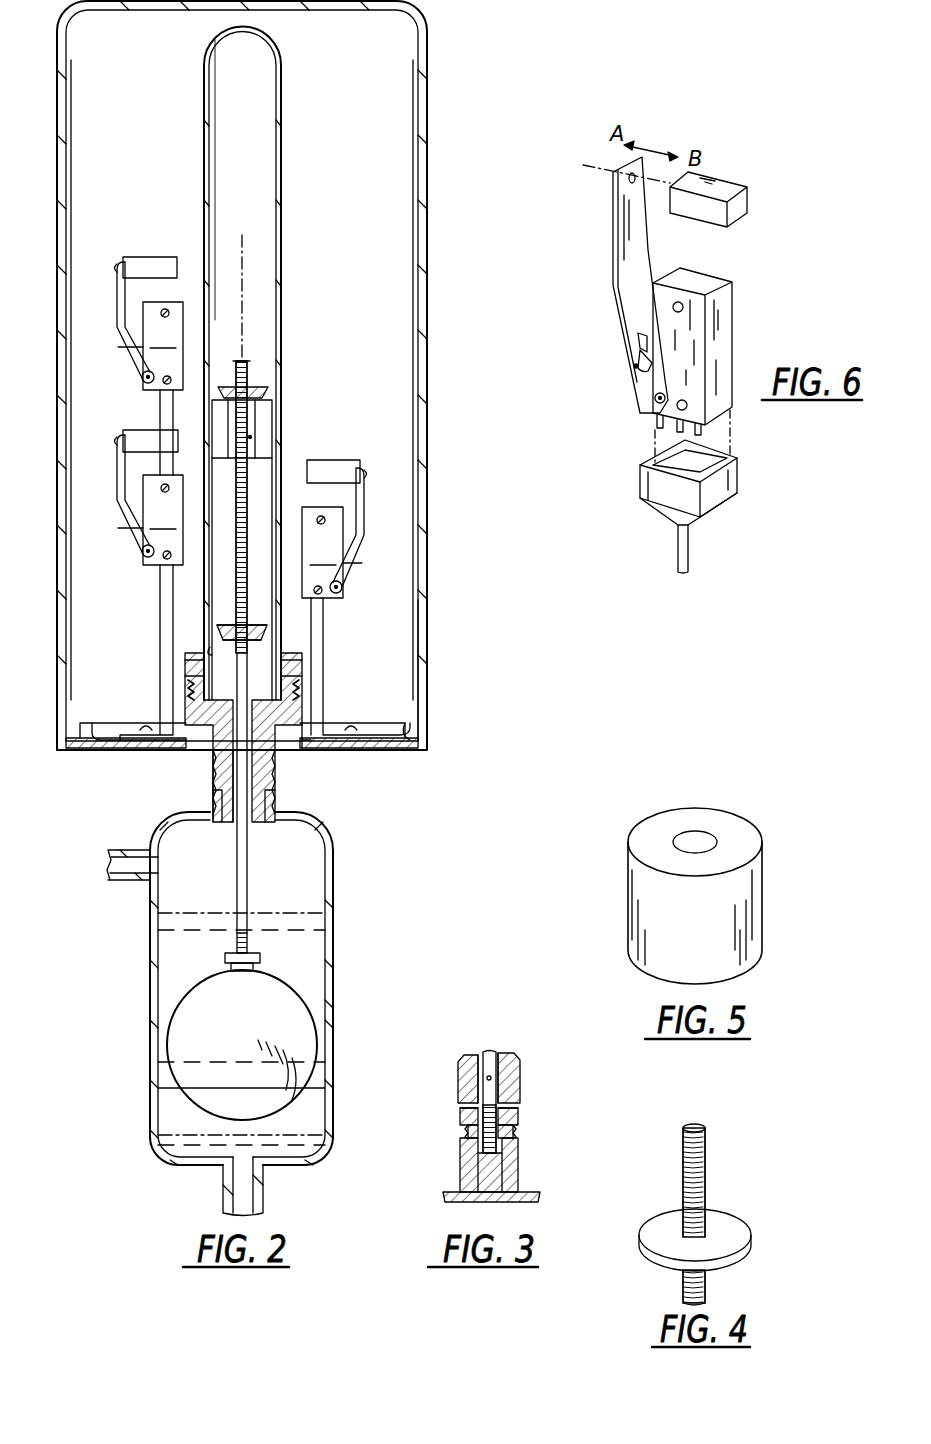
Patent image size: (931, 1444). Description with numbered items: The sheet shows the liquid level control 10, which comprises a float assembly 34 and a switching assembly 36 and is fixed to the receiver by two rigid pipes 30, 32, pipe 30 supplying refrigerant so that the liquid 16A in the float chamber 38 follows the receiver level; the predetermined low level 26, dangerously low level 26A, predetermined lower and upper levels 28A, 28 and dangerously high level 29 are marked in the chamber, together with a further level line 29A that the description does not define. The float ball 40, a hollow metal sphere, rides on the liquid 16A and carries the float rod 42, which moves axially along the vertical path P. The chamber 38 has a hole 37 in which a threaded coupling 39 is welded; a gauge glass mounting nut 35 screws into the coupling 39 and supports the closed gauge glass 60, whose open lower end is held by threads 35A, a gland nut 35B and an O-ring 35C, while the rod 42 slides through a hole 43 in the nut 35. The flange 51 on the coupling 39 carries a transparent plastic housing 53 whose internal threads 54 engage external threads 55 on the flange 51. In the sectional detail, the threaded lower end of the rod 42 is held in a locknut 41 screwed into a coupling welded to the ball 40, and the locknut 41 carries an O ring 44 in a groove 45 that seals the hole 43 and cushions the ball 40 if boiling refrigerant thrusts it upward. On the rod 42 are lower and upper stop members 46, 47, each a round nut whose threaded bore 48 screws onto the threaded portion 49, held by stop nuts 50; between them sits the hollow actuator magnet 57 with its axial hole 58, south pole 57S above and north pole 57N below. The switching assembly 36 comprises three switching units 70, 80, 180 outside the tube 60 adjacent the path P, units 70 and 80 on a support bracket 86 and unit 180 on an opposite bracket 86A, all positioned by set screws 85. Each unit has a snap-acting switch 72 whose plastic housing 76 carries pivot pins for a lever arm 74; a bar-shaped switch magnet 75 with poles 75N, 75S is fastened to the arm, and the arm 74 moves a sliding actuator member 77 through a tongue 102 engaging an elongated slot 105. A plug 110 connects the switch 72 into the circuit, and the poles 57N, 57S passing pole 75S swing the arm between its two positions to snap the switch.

In FIG. 2, the liquid level control 10 is at (378, 794).
In FIG. 2, the liquid 16A is at (305, 1126).
In FIG. 2, the predetermined low level 26 is at (175, 1135).
In FIG. 2, the dangerously low level 26A is at (165, 1146).
In FIG. 2, the predetermined upper level 28 is at (200, 1062).
In FIG. 2, the predetermined lower level 28A is at (170, 1086).
In FIG. 2, the dangerously high level 29 is at (170, 915).
In FIG. 2, the high level line 29A is at (178, 932).
In FIG. 2, the pipe 30 is at (265, 1200).
In FIG. 2, the pipe 32 is at (130, 850).
In FIG. 2, the float assembly 34 is at (338, 960).
In FIG. 2, the gauge glass mounting nut 35 is at (272, 802).
In FIG. 3, the gauge glass mounting nut 35 is at (520, 1066).
In FIG. 2, the threads 35A is at (302, 668).
In FIG. 2, the gland nut 35B is at (187, 662).
In FIG. 2, the O-ring 35C is at (294, 690).
In FIG. 2, the switching assembly 36 is at (436, 52).
In FIG. 2, the hole 37 is at (212, 814).
In FIG. 2, the float chamber 38 is at (336, 1008).
In FIG. 2, the coupling 39 is at (213, 772).
In FIG. 2, the float ball 40 is at (268, 990).
In FIG. 3, the float ball 40 is at (532, 1198).
In FIG. 3, the locknut 41 is at (518, 1128).
In FIG. 2, the float rod 42 is at (249, 852).
In FIG. 3, the float rod 42 is at (492, 1050).
In FIG. 4, the float rod 42 is at (706, 1133).
In FIG. 2, the hole 43 is at (250, 770).
In FIG. 3, the hole 43 is at (492, 1080).
In FIG. 3, the O ring 44 is at (512, 1114).
In FIG. 3, the groove 45 is at (460, 1116).
In FIG. 2, the lower stop member 46 is at (224, 626).
In FIG. 4, the lower stop member 46 is at (750, 1253).
In FIG. 2, the upper stop member 47 is at (266, 394).
In FIG. 2, the threaded bore 48 is at (248, 628).
In FIG. 4, the threaded bore 48 is at (705, 1220).
In FIG. 2, the threaded portion 49 is at (248, 505).
In FIG. 4, the threaded portion 49 is at (706, 1160).
In FIG. 2, the stop nuts 50 is at (262, 386).
In FIG. 2, the flange 51 is at (350, 752).
In FIG. 3, the flange 51 is at (518, 1168).
In FIG. 2, the protective housing 53 is at (428, 662).
In FIG. 2, the internal threads 54 is at (416, 726).
In FIG. 2, the external threads 55 is at (430, 750).
In FIG. 2, the actuator magnet 57 is at (262, 423).
In FIG. 5, the actuator magnet 57 is at (762, 907).
In FIG. 2, the actuator magnet north pole 57N is at (270, 448).
In FIG. 5, the actuator magnet north pole 57N is at (762, 950).
In FIG. 2, the actuator magnet south pole 57S is at (268, 410).
In FIG. 5, the actuator magnet south pole 57S is at (735, 876).
In FIG. 2, the axial hole 58 is at (252, 437).
In FIG. 5, the axial hole 58 is at (698, 832).
In FIG. 2, the gauge glass 60 is at (283, 224).
In FIG. 2, the switching unit 70 is at (122, 545).
In FIG. 2, the snap-acting switch 72 is at (243, 450).
In FIG. 6, the snap-acting switch 72 is at (670, 316).
In FIG. 6, the switch actuating lever arm 74 is at (614, 294).
In FIG. 6, the switch magnet 75 is at (720, 182).
In FIG. 6, the switch magnet north pole 75N is at (677, 214).
In FIG. 6, the switch magnet south pole 75S is at (716, 230).
In FIG. 6, the switch housing 76 is at (706, 273).
In FIG. 6, the switch actuator member 77 is at (640, 357).
In FIG. 2, the switching unit 80 is at (133, 377).
In FIG. 2, the set screws 85 is at (158, 384).
In FIG. 2, the support bracket 86 is at (124, 440).
In FIG. 2, the support bracket 86A is at (324, 684).
In FIG. 6, the tongue 102 is at (634, 368).
In FIG. 6, the elongated slot 105 is at (640, 340).
In FIG. 6, the connector or plug 110 is at (720, 483).
In FIG. 2, the switching unit 180 is at (359, 585).
In FIG. 2, the vertical path P is at (244, 296).